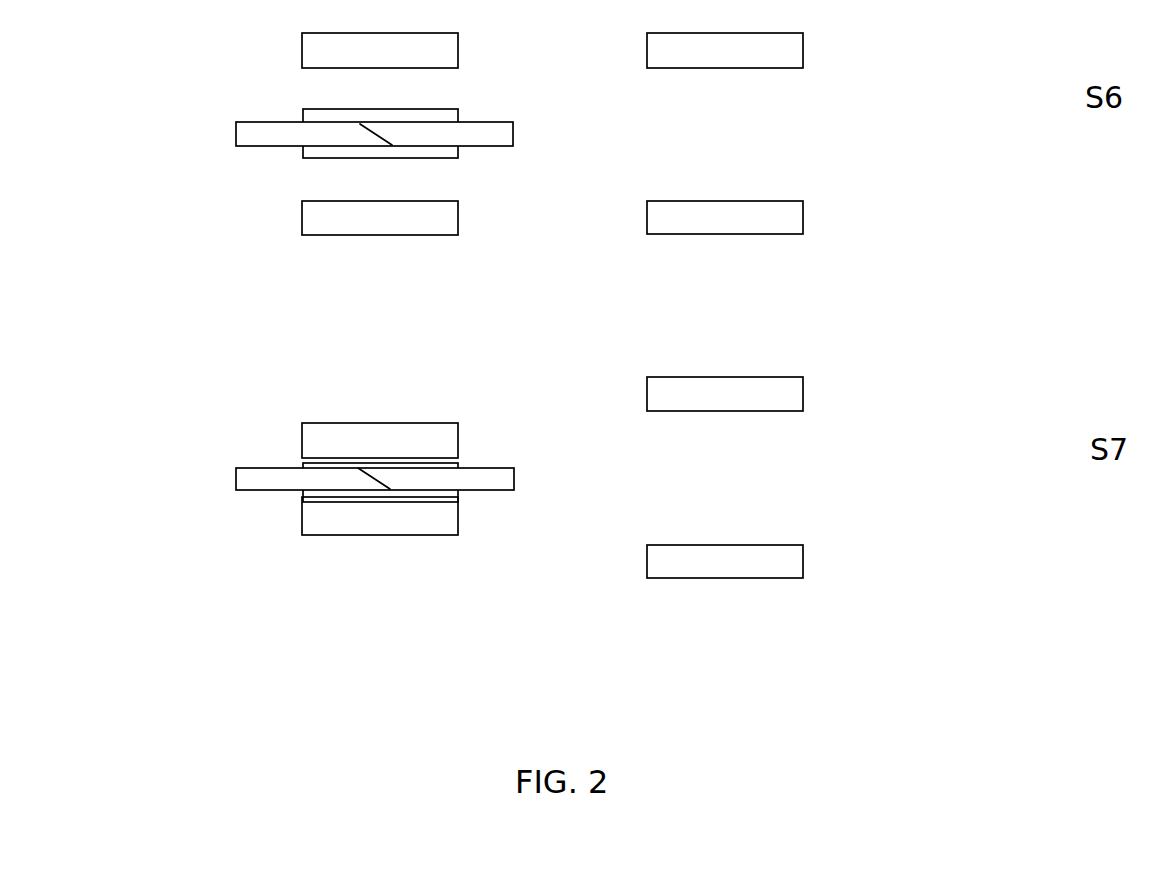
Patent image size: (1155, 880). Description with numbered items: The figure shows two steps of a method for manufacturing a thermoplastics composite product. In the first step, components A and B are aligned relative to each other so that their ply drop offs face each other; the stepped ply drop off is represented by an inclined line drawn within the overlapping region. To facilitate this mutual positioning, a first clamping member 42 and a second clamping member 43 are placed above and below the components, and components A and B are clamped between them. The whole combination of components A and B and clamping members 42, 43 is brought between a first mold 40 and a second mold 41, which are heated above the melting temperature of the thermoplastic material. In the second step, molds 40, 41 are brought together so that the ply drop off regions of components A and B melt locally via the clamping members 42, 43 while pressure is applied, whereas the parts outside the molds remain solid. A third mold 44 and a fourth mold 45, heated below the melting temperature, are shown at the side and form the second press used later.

The first mold 40 is at (313, 47).
The second mold 41 is at (312, 214).
The first clamping member 42 is at (435, 116).
The second clamping member 43 is at (437, 150).
The third mold 44 is at (783, 49).
The fourth mold 45 is at (783, 218).
The component A is at (245, 132).
The component B is at (493, 135).